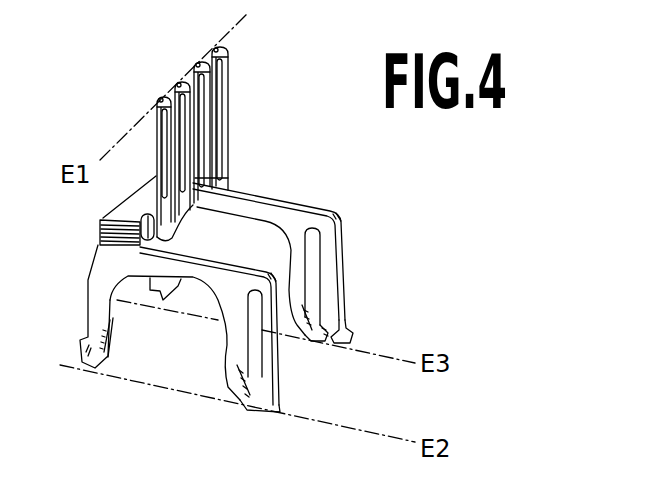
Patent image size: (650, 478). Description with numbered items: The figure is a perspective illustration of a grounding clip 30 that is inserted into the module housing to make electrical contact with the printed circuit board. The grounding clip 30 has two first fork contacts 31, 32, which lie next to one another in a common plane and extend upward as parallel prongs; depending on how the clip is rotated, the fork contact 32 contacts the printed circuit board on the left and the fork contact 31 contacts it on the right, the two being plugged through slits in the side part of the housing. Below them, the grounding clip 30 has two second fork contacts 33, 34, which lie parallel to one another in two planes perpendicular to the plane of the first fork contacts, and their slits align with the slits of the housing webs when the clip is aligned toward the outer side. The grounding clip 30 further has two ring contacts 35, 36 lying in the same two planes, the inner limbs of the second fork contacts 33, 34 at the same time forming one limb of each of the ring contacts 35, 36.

The grounding clip 30 is at (287, 66).
The first fork contact 31 is at (160, 130).
The first fork contact 32 is at (226, 97).
The second fork contact 33 is at (253, 387).
The second fork contact 34 is at (310, 333).
The ring contact 35 is at (97, 363).
The ring contact 36 is at (158, 298).